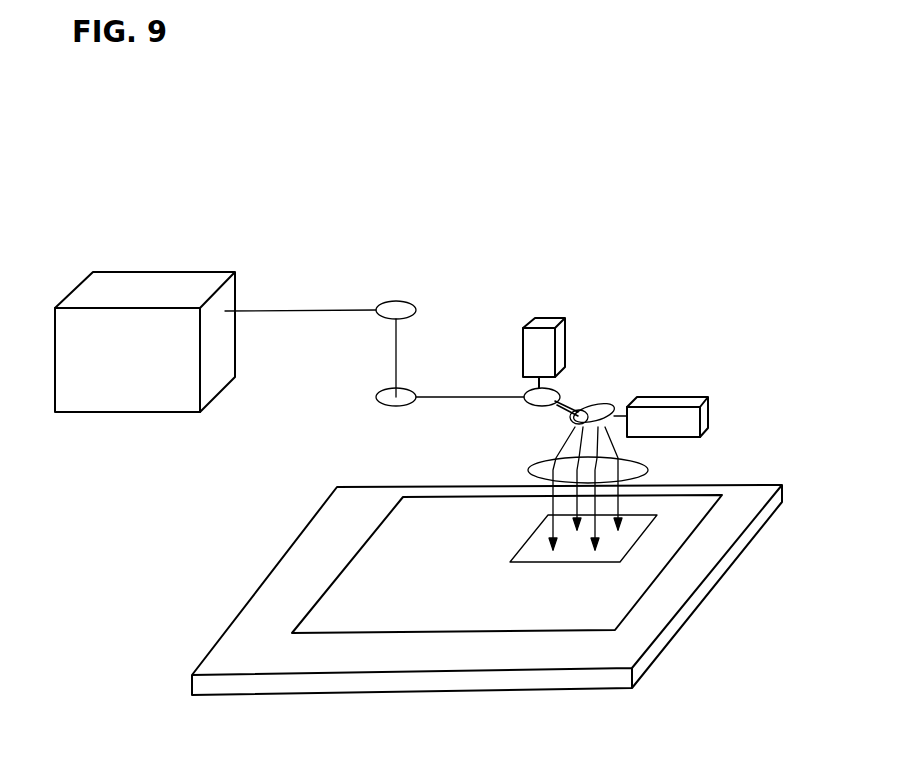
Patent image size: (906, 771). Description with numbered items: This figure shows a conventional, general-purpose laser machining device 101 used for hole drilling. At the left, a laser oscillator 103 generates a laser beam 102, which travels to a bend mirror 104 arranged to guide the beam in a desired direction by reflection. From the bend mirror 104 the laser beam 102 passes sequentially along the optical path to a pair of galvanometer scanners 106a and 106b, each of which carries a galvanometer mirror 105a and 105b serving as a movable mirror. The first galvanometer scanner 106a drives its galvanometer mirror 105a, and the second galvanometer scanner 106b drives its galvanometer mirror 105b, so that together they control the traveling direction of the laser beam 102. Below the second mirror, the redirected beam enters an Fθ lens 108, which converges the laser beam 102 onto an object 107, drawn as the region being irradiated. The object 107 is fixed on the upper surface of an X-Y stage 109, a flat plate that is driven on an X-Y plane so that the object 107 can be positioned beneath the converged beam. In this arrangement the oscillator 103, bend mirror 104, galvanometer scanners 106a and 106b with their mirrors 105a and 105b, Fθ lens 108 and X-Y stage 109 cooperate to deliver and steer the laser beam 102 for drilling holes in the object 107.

The laser machining device 101 is at (157, 542).
The laser beam 102 is at (243, 310).
The laser oscillator 103 is at (125, 412).
The bend mirror 104 is at (413, 302).
The galvanometer mirror 105a is at (525, 400).
The galvanometer mirror 105b is at (603, 405).
The galvanometer scanner 106a is at (565, 323).
The galvanometer scanner 106b is at (700, 394).
The object 107 is at (417, 605).
The Fθ lens 108 is at (640, 468).
The X-Y stage 109 is at (630, 613).